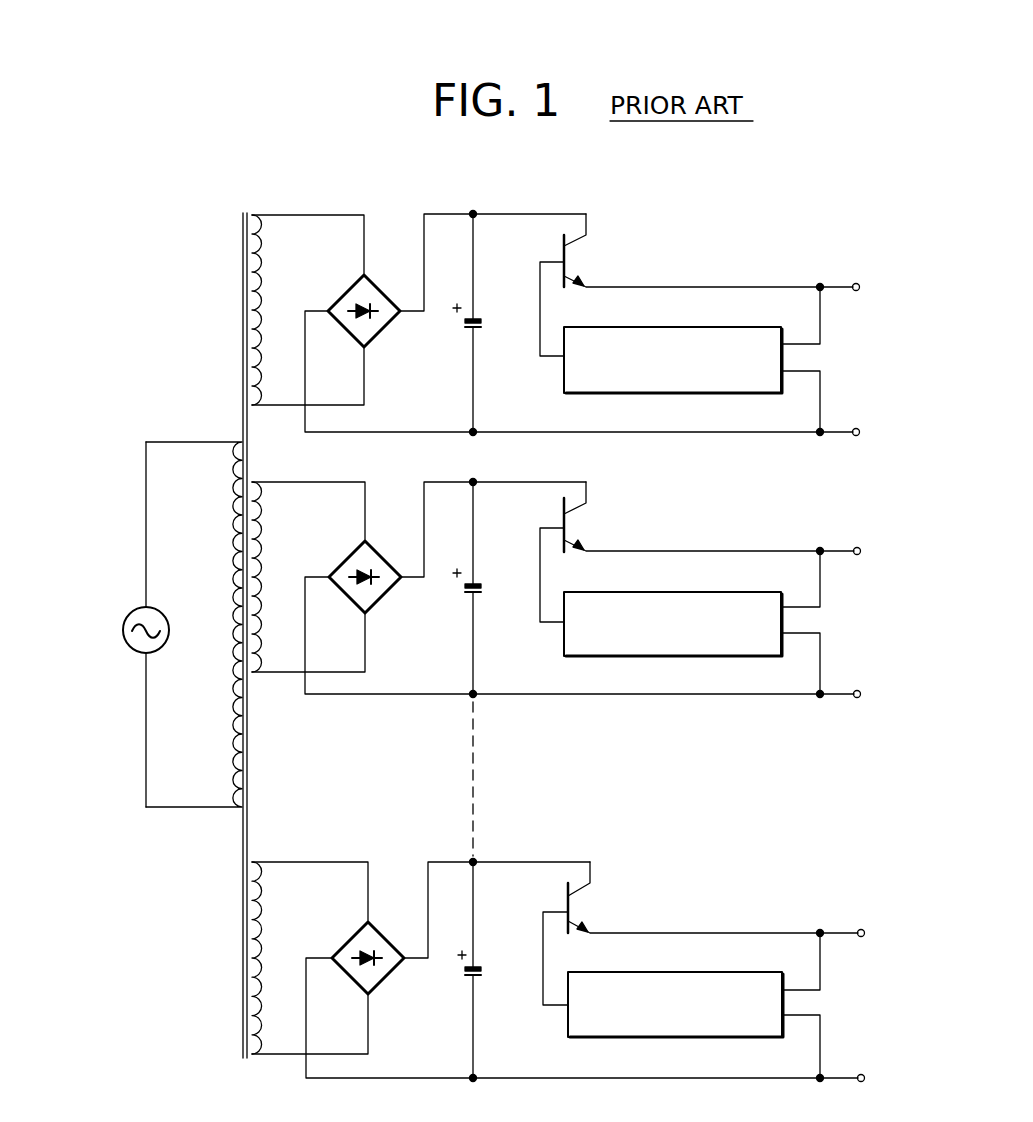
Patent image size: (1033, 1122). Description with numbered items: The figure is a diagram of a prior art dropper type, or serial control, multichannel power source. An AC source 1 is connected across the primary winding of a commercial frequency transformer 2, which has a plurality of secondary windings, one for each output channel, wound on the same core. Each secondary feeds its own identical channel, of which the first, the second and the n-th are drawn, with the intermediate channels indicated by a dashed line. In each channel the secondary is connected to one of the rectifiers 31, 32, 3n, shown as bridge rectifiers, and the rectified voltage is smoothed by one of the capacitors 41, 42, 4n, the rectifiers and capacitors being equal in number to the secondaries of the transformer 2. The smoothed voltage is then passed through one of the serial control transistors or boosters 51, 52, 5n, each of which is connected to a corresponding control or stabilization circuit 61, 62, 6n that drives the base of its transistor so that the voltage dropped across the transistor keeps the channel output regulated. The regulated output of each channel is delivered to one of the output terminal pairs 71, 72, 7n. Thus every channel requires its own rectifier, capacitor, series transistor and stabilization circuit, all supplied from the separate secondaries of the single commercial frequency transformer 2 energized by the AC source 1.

The AC source 1 is at (122, 629).
The commercial frequency transformer 2 is at (238, 278).
The rectifier 31 is at (386, 331).
The rectifier 32 is at (387, 597).
The rectifier 3n is at (389, 977).
The capacitor 41 is at (484, 323).
The capacitor 42 is at (484, 588).
The capacitor 4n is at (484, 971).
The serial control transistor 51 is at (573, 262).
The serial control transistor 52 is at (573, 528).
The serial control transistor 5n is at (577, 912).
The stabilization circuit 61 is at (562, 370).
The stabilization circuit 62 is at (564, 637).
The stabilization circuit 6n is at (567, 1017).
The output terminal pair 71 is at (855, 283).
The output terminal pair 72 is at (857, 547).
The output terminal pair 7n is at (861, 929).